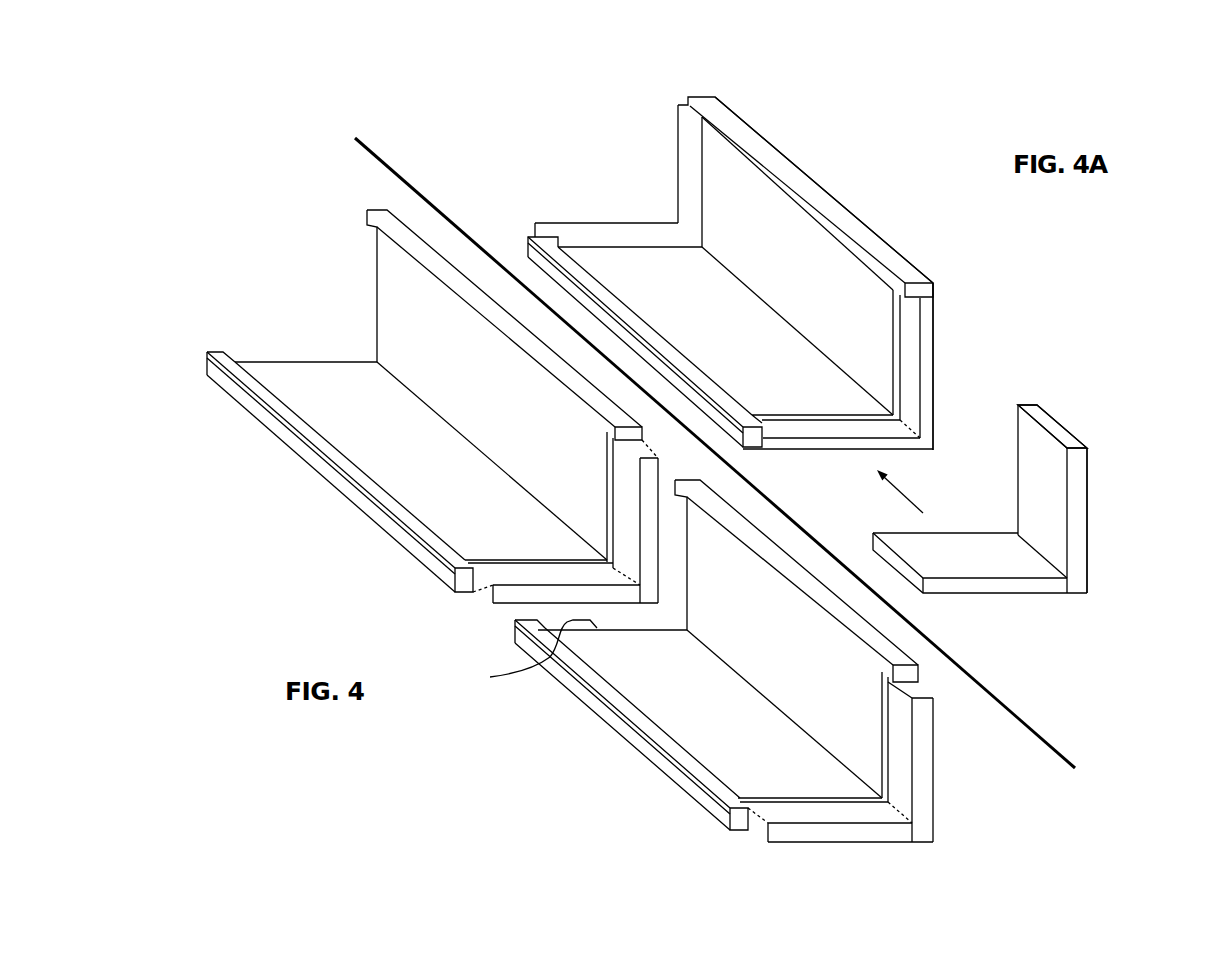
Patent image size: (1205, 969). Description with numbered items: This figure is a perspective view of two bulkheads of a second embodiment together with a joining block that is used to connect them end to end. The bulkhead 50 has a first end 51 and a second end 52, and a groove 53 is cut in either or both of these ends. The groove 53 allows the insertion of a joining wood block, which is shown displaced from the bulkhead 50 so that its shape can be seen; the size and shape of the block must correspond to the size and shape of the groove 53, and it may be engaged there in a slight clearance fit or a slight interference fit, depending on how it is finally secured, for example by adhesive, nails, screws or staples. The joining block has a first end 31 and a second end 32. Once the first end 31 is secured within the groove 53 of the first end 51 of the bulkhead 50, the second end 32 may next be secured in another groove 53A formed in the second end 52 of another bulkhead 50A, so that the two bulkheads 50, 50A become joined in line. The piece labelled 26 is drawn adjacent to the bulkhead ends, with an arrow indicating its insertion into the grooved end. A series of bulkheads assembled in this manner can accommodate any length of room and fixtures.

In FIG. 4, the bulkhead 50 is at (297, 485).
In FIG. 4A, the bulkhead 50 is at (835, 179).
In FIG. 4, the another bulkhead 50A is at (596, 736).
In FIG. 4, the angle bracket 26 is at (483, 606).
In FIG. 4A, the angle bracket 26 is at (667, 150).
In FIG. 4A, the second end 52 is at (716, 93).
In FIG. 4A, the first end 51 is at (933, 280).
In FIG. 4A, the groove 53 is at (893, 452).
In FIG. 4, the another groove 53A is at (522, 655).
In FIG. 4A, the first end of joining wood block 31 is at (1037, 400).
In FIG. 4A, the second end of joining wood block 32 is at (1090, 444).